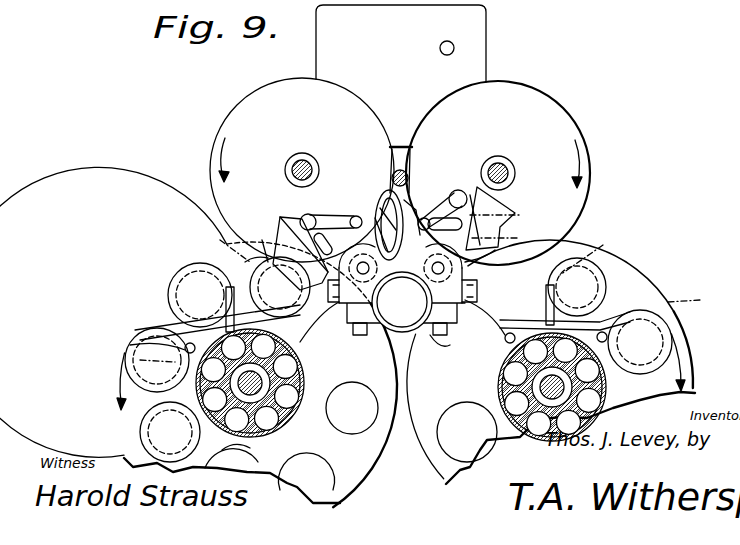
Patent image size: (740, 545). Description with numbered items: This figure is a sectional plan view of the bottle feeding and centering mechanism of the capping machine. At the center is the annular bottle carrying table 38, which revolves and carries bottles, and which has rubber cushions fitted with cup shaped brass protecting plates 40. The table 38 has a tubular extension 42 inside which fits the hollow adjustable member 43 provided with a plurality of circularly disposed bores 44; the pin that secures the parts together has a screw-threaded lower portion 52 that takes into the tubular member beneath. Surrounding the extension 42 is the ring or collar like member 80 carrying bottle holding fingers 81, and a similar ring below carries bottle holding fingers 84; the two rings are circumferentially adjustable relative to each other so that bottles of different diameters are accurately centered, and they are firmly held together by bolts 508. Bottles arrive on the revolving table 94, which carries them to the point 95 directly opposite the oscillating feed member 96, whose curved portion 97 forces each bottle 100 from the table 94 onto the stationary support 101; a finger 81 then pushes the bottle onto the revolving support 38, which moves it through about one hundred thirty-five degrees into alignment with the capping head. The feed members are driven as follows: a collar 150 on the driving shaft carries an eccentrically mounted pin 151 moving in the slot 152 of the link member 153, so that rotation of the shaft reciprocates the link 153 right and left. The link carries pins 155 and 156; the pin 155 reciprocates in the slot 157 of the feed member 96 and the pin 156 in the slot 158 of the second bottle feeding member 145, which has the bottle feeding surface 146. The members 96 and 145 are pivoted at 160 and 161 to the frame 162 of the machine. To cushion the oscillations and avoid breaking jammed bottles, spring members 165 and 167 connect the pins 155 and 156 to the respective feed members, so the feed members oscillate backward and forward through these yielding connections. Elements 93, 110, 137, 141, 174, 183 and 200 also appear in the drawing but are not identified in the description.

The annular bottle carrying table 38 is at (205, 242).
The cup shaped brass protecting plates 40 is at (185, 275).
The tubular extension 42 is at (140, 345).
The hollow adjustable member 43 is at (250, 475).
The circularly disposed bores 44 is at (236, 446).
The screw-threaded lower portion 52 is at (300, 406).
The ring or collar like member 80 is at (520, 322).
The bottle holding fingers 81 is at (150, 312).
The bottle holding fingers 84 is at (210, 338).
The right drum 93 is at (556, 133).
The revolving table 94 is at (305, 115).
The point 95 is at (266, 250).
The oscillating feed member 96 is at (292, 235).
The curved portion 97 is at (250, 262).
The bottle 100 is at (140, 360).
The stationary support 101 is at (600, 230).
The frame arc 110 is at (424, 424).
The drum shaft 137 is at (498, 167).
The drum shaft 141 is at (303, 165).
The bottle feeding member 145 is at (522, 215).
The bottle feeding surface 146 is at (520, 238).
The collar 150 is at (385, 192).
The pin 151 is at (375, 218).
The slot 152 is at (380, 208).
The link member 153 is at (416, 208).
The pin 155 is at (356, 217).
The pin 156 is at (424, 220).
The slot 157 is at (337, 247).
The slot 158 is at (454, 232).
The pivot 160 is at (360, 305).
The pivot 161 is at (490, 262).
The frame 162 is at (450, 349).
The spring member 165 is at (326, 216).
The spring member 167 is at (478, 213).
The pivot pin 174 is at (400, 170).
The pin 183 is at (447, 41).
The wheel 200 is at (414, 312).
The bolts 508 is at (608, 345).